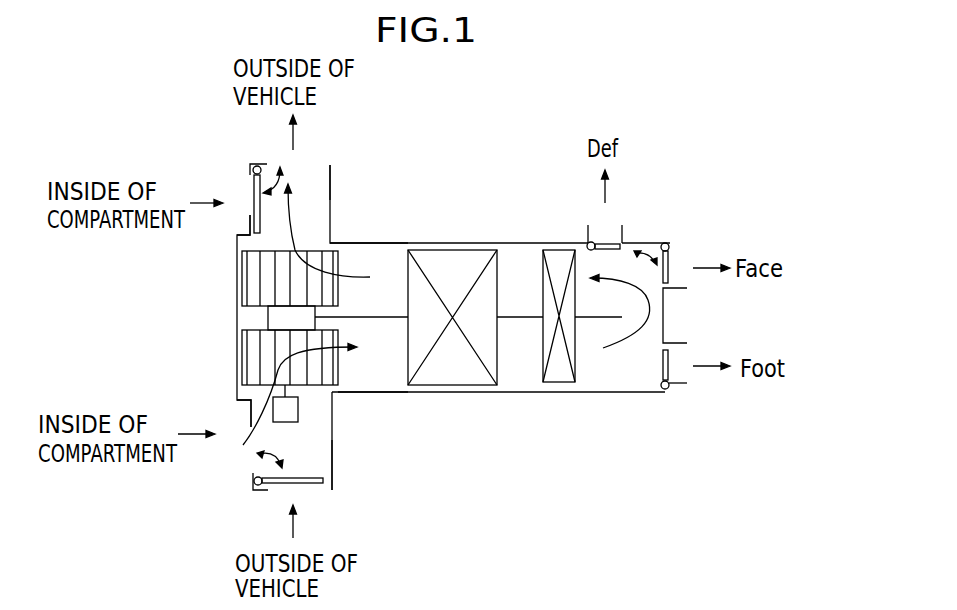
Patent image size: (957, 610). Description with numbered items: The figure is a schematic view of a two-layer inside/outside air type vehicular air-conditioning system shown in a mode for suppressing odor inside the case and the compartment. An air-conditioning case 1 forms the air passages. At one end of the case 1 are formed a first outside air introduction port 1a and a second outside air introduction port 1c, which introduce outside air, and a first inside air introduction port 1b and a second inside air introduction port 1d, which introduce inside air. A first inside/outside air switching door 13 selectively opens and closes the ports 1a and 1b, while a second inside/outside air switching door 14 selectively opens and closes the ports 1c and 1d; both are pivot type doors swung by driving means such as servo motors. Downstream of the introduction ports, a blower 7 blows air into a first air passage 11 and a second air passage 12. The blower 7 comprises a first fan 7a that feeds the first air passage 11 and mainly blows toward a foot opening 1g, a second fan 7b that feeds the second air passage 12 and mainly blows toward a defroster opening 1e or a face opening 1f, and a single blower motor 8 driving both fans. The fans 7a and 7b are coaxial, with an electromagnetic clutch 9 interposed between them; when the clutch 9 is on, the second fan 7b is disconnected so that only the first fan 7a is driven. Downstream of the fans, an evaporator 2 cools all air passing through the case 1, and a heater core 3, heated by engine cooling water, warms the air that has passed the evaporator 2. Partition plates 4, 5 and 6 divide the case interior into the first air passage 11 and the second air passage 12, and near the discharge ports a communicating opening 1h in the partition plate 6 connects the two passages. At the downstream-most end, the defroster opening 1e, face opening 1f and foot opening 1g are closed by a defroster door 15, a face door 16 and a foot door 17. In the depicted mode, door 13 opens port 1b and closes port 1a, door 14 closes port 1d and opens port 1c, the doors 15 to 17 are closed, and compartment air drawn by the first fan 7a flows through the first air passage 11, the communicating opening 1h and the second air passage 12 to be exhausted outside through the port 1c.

The air-conditioning case 1 is at (362, 242).
The first outside air introduction port 1a is at (312, 488).
The first inside air introduction port 1b is at (248, 463).
The second outside air introduction port 1c is at (313, 172).
The second inside air introduction port 1d is at (247, 190).
The defroster opening 1e is at (602, 225).
The face opening 1f is at (688, 275).
The foot opening 1g is at (687, 370).
The communicating opening 1h is at (655, 317).
The evaporator 2 is at (470, 260).
The heater core 3 is at (558, 258).
The partition plate 4 is at (380, 320).
The partition plate 5 is at (525, 318).
The partition plate 6 is at (595, 317).
The blower 7 is at (233, 318).
The first fan 7a is at (265, 350).
The second fan 7b is at (265, 283).
The blower motor 8 is at (298, 408).
The electromagnetic clutch 9 is at (373, 317).
The first air passage 11 is at (398, 363).
The second air passage 12 is at (393, 252).
The first inside/outside air switching door 13 is at (280, 487).
The second inside/outside air switching door 14 is at (250, 213).
The defroster door 15 is at (613, 243).
The face door 16 is at (670, 258).
The foot door 17 is at (663, 365).